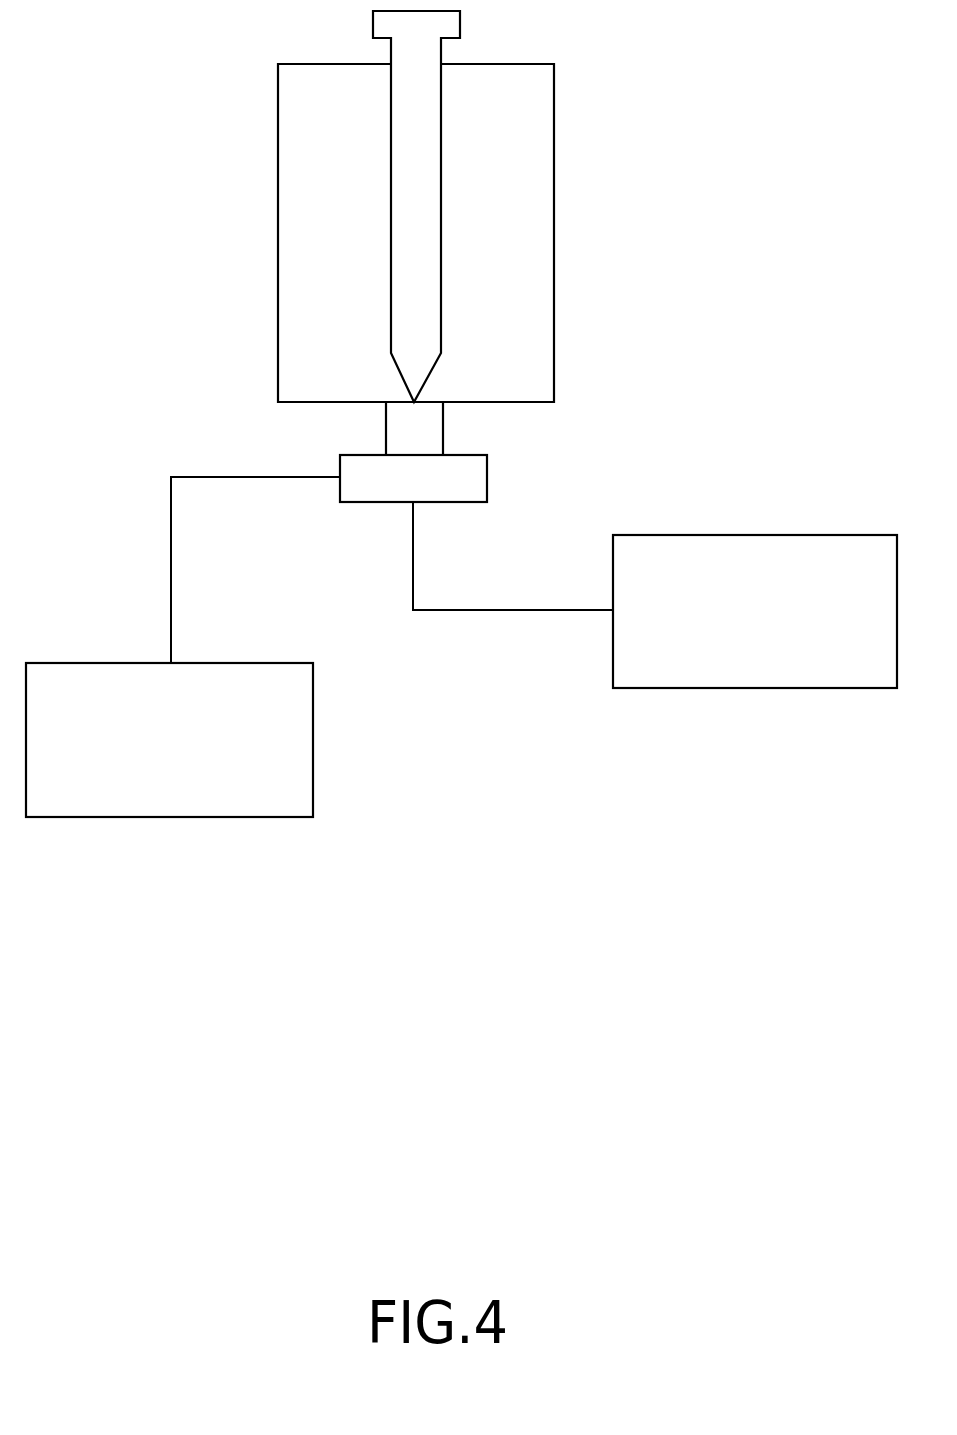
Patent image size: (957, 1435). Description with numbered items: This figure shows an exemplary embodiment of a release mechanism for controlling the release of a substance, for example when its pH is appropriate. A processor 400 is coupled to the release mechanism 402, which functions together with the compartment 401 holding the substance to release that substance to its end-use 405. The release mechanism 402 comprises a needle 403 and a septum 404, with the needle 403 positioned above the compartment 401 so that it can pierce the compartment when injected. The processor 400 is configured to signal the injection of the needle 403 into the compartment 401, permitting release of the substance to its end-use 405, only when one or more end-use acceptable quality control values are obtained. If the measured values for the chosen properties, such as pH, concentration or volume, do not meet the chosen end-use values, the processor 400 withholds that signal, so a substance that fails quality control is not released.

The processor 400 is at (188, 755).
The compartment 401 is at (506, 228).
The release mechanism 402 is at (463, 477).
The needle 403 is at (418, 53).
The septum 404 is at (423, 435).
The end-use 405 is at (779, 633).